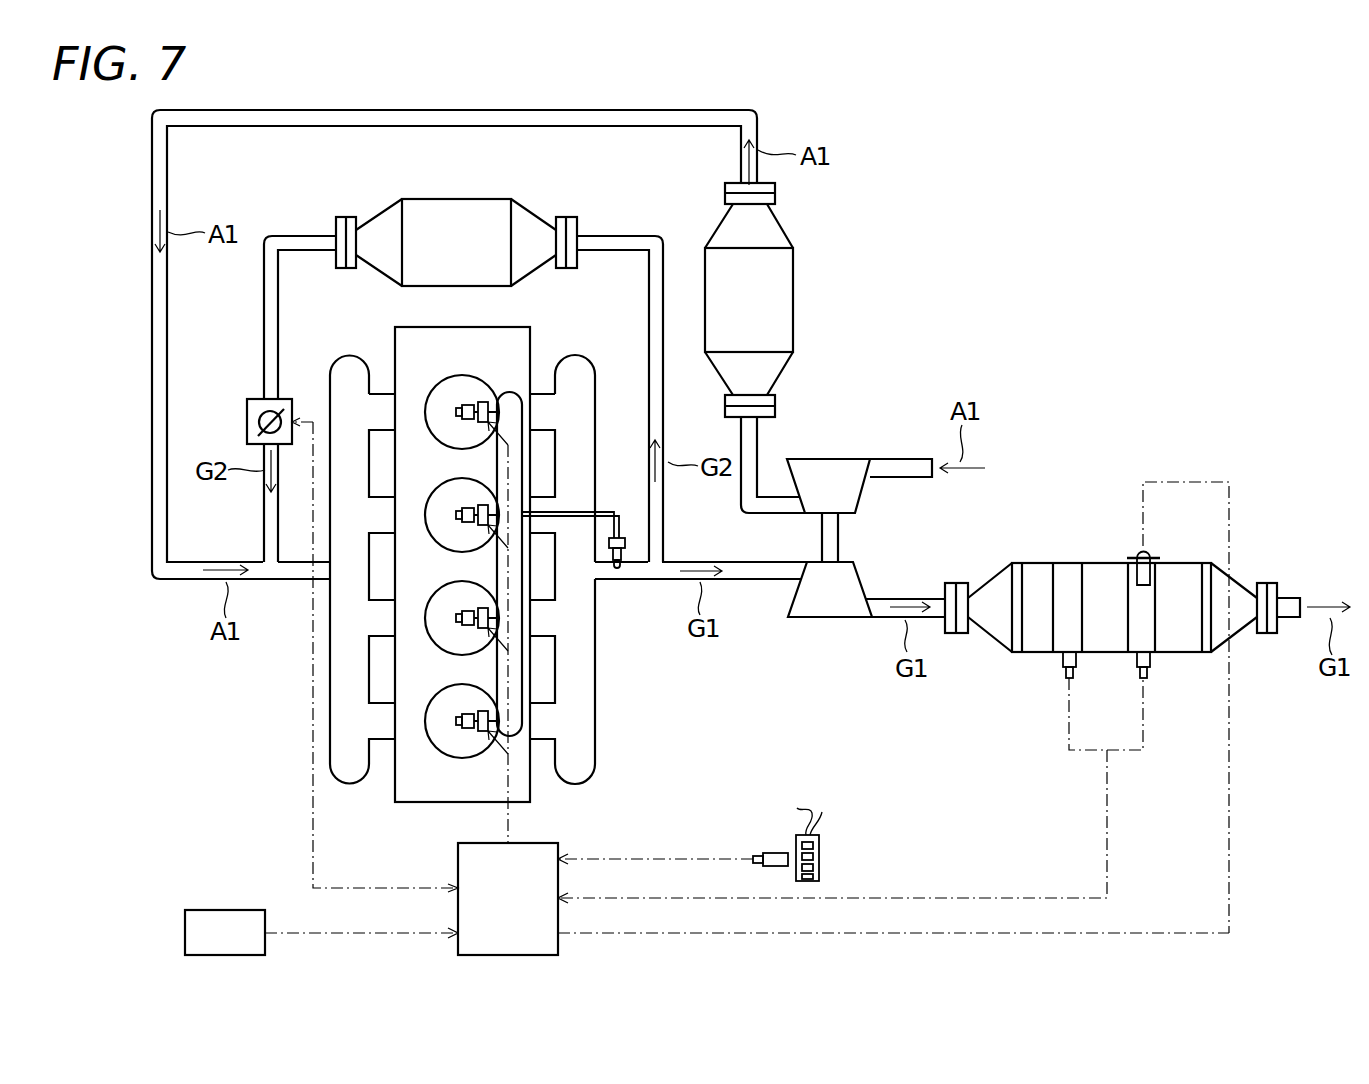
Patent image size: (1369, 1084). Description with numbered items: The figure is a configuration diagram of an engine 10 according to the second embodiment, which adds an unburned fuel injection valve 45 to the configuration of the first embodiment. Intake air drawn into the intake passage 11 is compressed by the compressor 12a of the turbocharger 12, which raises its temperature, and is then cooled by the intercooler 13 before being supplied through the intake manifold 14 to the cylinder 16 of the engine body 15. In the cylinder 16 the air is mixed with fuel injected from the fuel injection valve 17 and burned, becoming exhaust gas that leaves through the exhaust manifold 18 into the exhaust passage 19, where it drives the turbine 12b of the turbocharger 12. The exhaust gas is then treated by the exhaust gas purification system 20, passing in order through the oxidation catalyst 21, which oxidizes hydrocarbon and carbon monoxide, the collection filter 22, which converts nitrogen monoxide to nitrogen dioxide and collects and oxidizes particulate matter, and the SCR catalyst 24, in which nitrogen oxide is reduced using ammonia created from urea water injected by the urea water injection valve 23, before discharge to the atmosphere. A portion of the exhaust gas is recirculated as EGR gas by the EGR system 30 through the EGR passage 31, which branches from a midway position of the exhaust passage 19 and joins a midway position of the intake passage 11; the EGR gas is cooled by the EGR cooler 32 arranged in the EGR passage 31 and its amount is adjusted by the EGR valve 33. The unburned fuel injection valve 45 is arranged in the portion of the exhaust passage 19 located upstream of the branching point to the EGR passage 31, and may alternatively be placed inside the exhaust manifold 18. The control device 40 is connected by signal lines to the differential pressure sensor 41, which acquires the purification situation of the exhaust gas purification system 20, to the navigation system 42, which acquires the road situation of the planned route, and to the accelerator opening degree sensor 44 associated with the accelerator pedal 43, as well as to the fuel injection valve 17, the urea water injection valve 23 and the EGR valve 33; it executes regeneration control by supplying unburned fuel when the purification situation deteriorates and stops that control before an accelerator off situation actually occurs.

The engine 10 is at (918, 180).
The intake passage 11 is at (293, 128).
The turbocharger 12 is at (800, 455).
The compressor 12a is at (833, 458).
The turbine 12b is at (830, 620).
The intercooler 13 is at (795, 272).
The intake manifold 14 is at (330, 690).
The engine body 15 is at (530, 348).
The cylinder 16 is at (445, 375).
The fuel injection valve 17 is at (480, 392).
The exhaust manifold 18 is at (596, 722).
The exhaust passage 19 is at (752, 582).
The exhaust gas purification system 20 is at (1122, 573).
The oxidation catalyst 21 is at (1038, 562).
The collection filter 22 is at (1093, 562).
The urea water injection valve 23 is at (1140, 546).
The SCR catalyst 24 is at (1186, 562).
The EGR system 30 is at (640, 233).
The EGR passage 31 is at (263, 324).
The EGR cooler 32 is at (455, 198).
The EGR valve 33 is at (247, 422).
The control device 40 is at (524, 914).
The differential pressure sensor 41 is at (1148, 680).
The navigation system 42 is at (240, 946).
The accelerator pedal 43 is at (820, 858).
The accelerator opening degree sensor 44 is at (772, 852).
The unburned fuel injection valve 45 is at (620, 534).